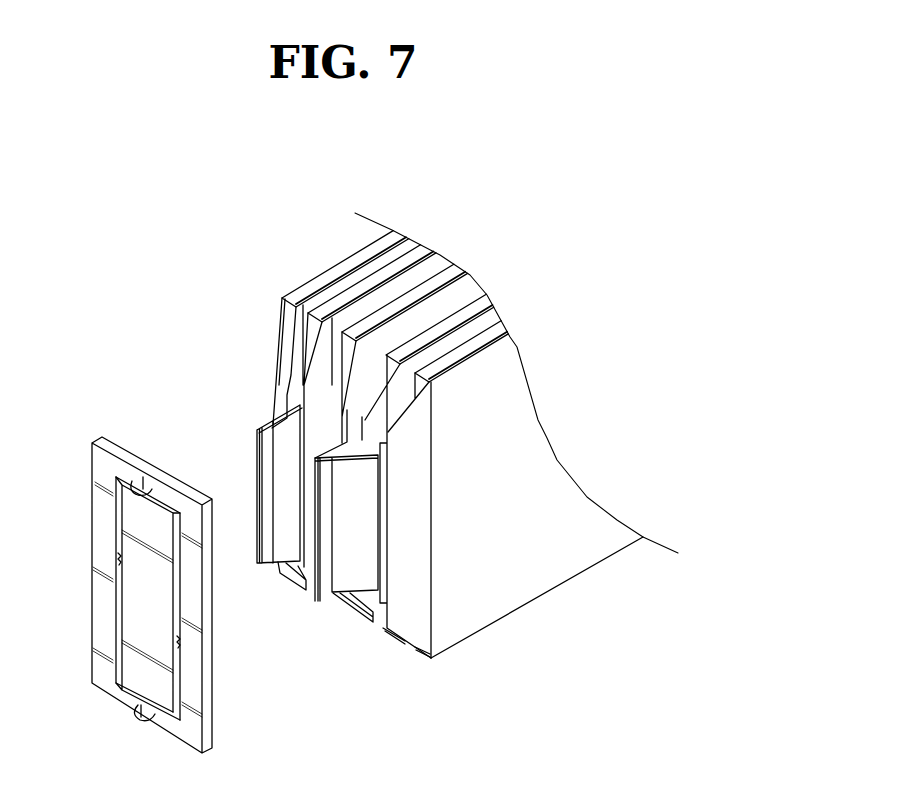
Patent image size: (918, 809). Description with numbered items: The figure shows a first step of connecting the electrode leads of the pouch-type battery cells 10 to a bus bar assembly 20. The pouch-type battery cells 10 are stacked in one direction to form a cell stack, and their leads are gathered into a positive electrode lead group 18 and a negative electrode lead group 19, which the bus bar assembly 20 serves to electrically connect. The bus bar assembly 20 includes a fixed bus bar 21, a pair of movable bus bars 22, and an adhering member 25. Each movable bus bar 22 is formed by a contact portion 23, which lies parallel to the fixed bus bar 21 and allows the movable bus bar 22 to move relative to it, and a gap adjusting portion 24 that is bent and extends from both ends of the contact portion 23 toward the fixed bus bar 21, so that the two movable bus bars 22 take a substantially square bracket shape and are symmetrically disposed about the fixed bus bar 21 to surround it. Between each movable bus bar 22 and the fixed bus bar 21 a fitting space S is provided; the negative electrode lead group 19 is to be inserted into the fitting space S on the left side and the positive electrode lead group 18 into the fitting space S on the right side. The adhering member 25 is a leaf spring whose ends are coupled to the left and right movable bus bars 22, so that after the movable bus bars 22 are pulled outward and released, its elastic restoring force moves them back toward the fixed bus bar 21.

The pouch-type battery cell 10 is at (467, 433).
The positive electrode lead group 18 is at (348, 577).
The negative electrode lead group 19 is at (285, 542).
The bus bar assembly 20 is at (147, 564).
The fixed bus bar 21 is at (128, 670).
The movable bus bar 22 is at (89, 650).
The contact portion 23 is at (100, 599).
The gap adjusting portion 24 is at (126, 470).
The adhering member 25 is at (132, 492).
The fitting space S is at (117, 559).